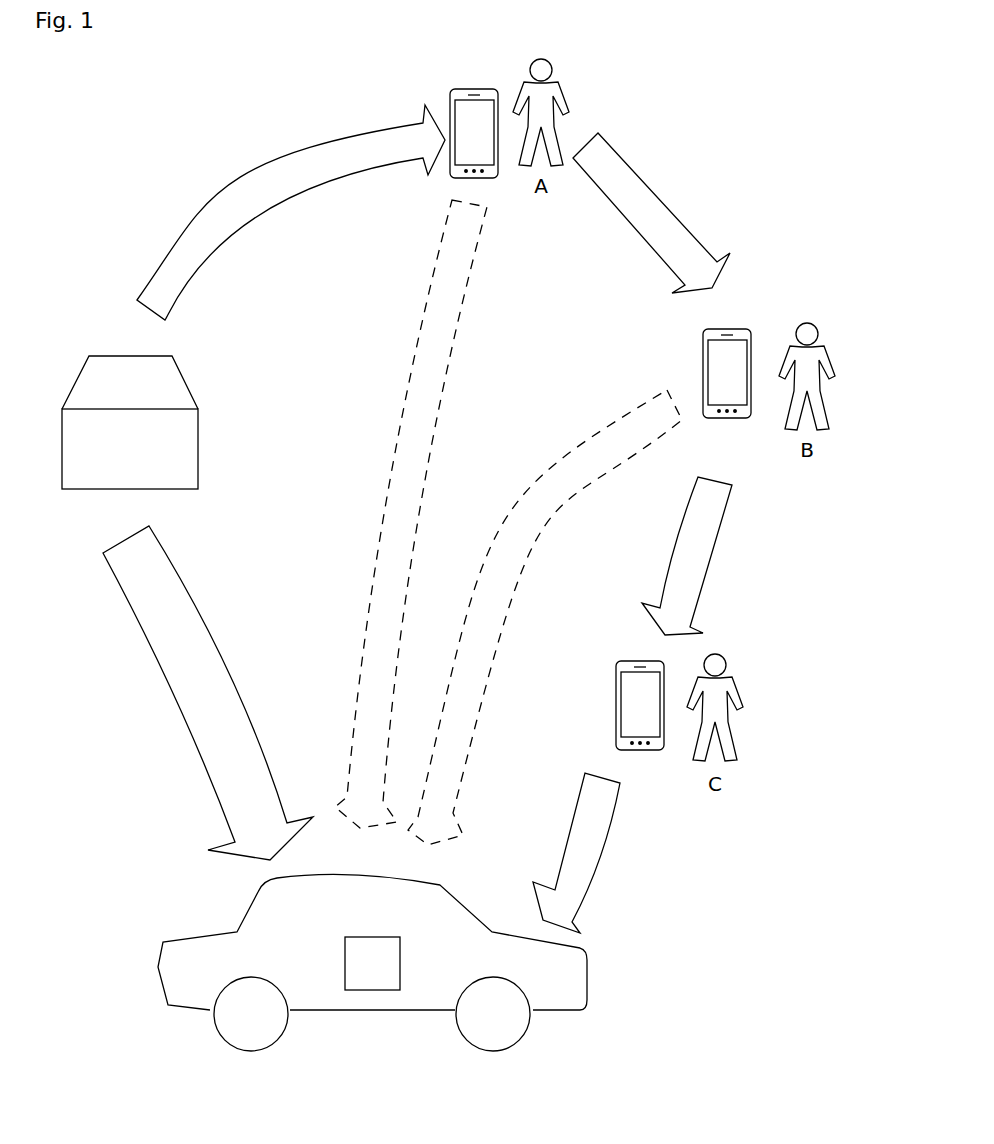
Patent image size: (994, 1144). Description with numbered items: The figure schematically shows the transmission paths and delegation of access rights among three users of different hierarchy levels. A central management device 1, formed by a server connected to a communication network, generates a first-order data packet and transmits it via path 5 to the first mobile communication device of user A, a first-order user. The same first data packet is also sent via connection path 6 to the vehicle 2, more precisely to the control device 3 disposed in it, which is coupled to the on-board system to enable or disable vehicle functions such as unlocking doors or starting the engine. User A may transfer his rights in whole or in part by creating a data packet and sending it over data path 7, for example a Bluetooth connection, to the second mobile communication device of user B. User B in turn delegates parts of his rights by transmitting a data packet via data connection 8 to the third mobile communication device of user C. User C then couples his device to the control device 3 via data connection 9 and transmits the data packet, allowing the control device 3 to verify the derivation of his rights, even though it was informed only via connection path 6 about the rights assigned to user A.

The central management device 1 is at (198, 417).
The vehicle 2 is at (195, 1010).
The control device 3 is at (375, 992).
The path 5 is at (283, 157).
The connection path 6 is at (153, 643).
The data path 7 is at (652, 183).
The data connection 8 is at (720, 550).
The data connection 9 is at (610, 830).